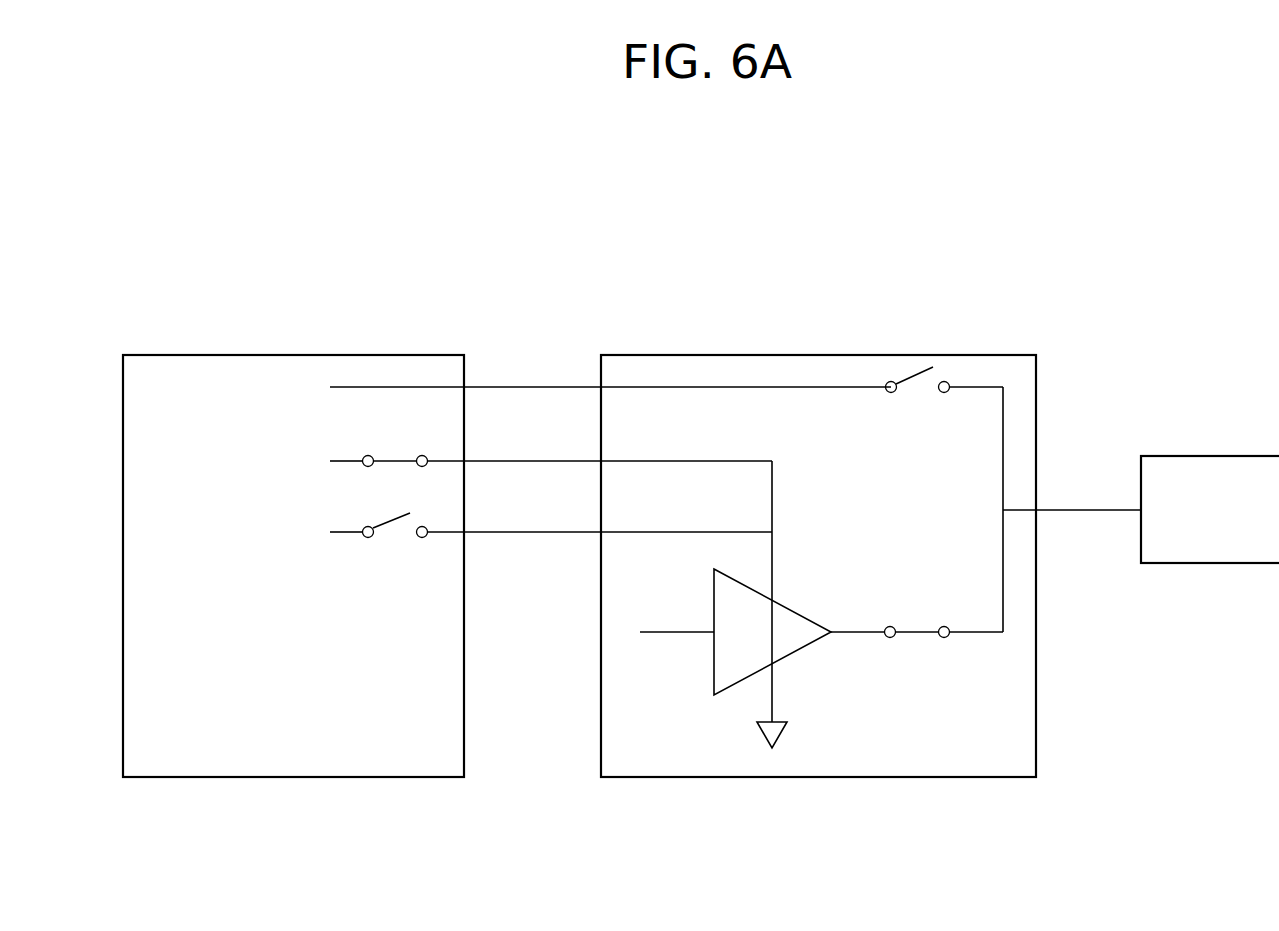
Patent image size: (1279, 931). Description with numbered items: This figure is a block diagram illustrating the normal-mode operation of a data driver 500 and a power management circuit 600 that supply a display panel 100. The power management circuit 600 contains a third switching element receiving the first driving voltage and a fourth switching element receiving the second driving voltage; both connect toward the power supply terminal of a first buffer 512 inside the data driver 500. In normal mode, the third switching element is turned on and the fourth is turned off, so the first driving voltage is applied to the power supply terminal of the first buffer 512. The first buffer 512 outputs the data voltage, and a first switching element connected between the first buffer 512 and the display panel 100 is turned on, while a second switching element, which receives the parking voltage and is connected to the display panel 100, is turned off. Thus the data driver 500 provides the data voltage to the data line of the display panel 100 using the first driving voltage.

The power management circuit 600 is at (292, 355).
The data driver 500 is at (871, 531).
The first buffer 512 is at (808, 617).
The display panel 100 is at (1226, 456).